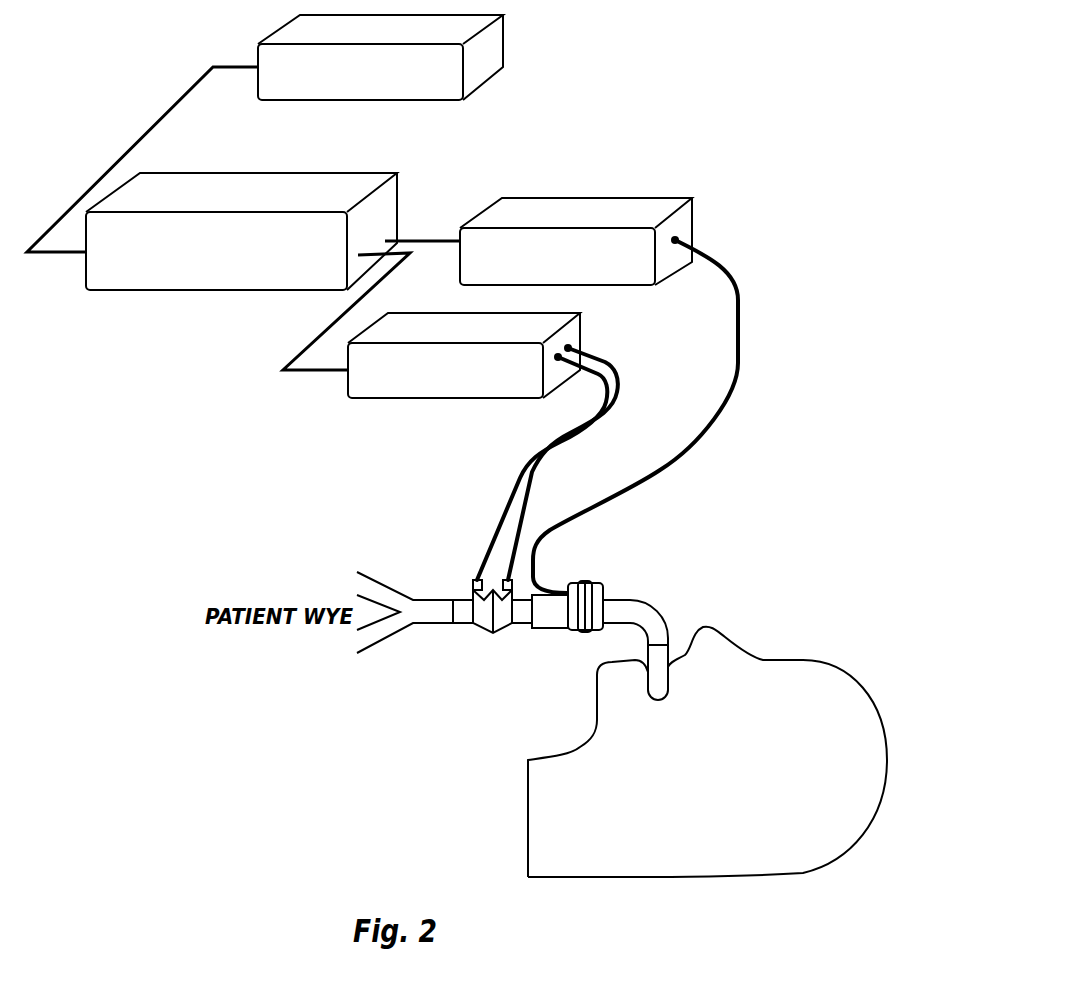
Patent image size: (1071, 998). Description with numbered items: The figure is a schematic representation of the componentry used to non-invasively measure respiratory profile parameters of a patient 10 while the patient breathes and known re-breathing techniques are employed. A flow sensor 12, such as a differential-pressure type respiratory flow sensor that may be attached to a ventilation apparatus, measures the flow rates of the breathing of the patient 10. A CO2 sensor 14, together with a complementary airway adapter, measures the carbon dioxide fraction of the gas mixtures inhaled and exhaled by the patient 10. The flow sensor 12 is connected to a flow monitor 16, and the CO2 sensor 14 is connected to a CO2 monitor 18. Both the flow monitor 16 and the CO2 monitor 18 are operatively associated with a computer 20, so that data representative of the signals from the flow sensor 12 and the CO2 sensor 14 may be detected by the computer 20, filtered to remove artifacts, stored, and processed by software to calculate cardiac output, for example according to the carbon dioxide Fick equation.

The patient 10 is at (547, 832).
The flow sensor 12 is at (483, 627).
The CO2 sensor 14 is at (597, 603).
The flow monitor 16 is at (387, 387).
The CO2 monitor 18 is at (592, 212).
The computer 20 is at (98, 63).